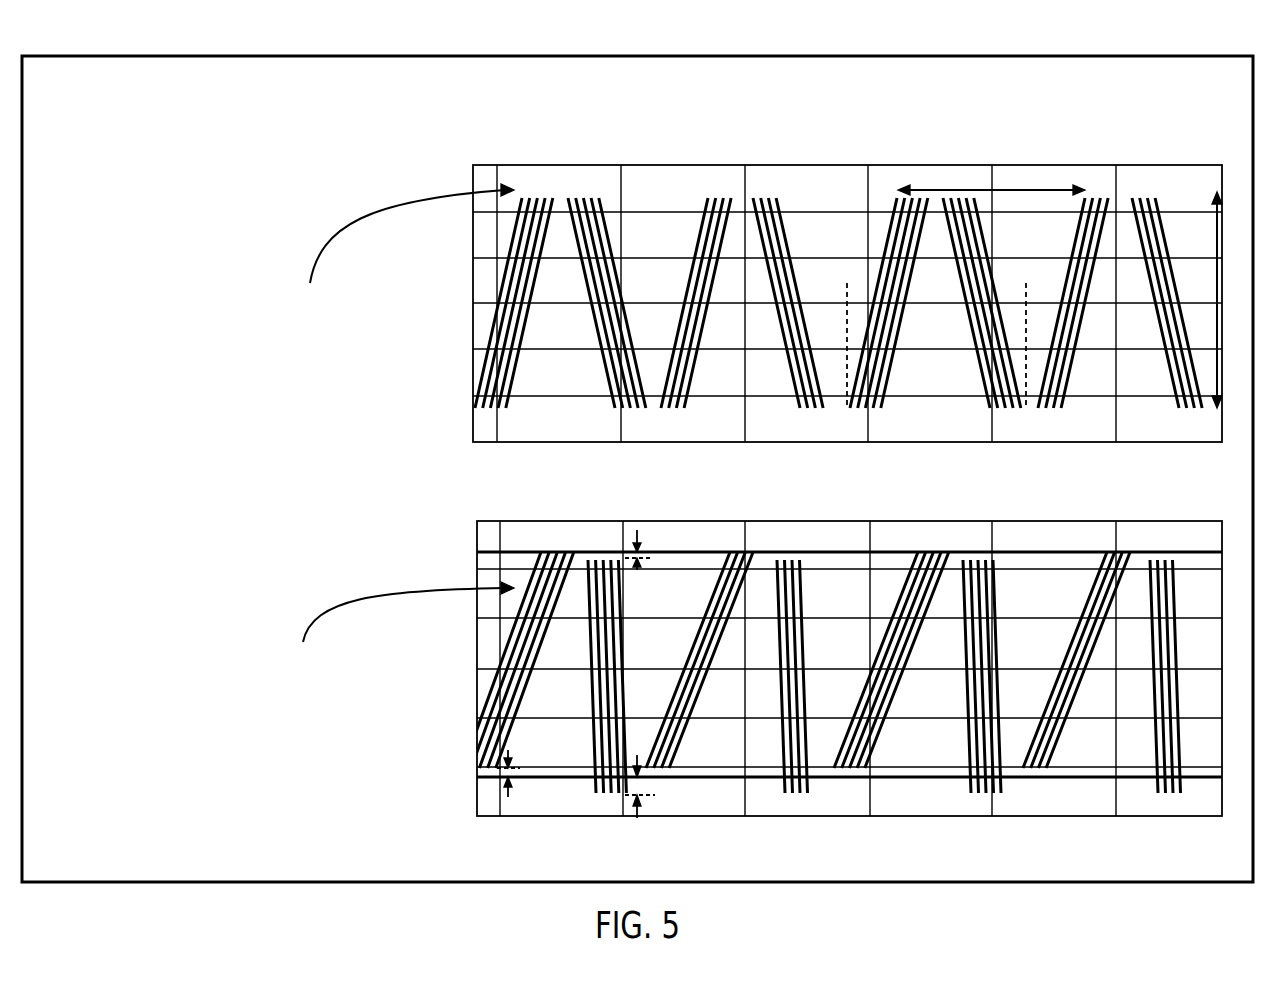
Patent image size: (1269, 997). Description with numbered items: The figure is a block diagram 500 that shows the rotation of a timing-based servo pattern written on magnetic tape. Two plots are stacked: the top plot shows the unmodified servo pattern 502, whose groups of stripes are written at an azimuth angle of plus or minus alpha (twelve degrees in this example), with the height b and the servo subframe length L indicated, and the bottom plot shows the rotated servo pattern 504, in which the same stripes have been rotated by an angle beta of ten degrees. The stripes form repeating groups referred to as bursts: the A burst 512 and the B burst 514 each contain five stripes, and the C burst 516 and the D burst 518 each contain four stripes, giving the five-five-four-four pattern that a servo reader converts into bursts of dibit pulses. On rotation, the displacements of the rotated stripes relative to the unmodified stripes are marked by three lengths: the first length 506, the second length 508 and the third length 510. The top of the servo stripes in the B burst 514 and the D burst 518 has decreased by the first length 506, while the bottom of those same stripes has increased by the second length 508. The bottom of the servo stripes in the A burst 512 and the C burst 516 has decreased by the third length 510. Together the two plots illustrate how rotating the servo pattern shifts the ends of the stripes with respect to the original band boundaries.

The block diagram 500 is at (95, 56).
The unmodified servo pattern 502 is at (118, 285).
The rotated servo pattern 504 is at (635, 682).
The length m1 506 is at (658, 525).
The length m2 508 is at (650, 808).
The length m3 510 is at (523, 808).
The A burst 512 is at (500, 744).
The B burst 514 is at (623, 605).
The C burst 516 is at (670, 753).
The D burst 518 is at (802, 604).